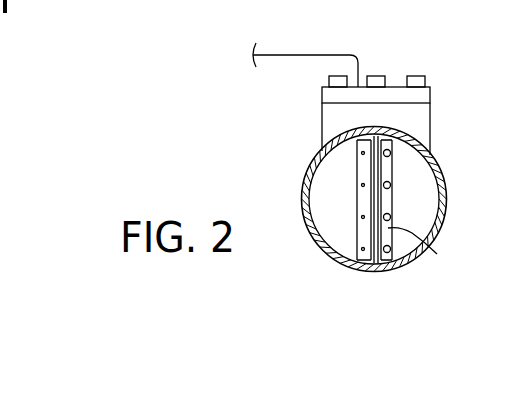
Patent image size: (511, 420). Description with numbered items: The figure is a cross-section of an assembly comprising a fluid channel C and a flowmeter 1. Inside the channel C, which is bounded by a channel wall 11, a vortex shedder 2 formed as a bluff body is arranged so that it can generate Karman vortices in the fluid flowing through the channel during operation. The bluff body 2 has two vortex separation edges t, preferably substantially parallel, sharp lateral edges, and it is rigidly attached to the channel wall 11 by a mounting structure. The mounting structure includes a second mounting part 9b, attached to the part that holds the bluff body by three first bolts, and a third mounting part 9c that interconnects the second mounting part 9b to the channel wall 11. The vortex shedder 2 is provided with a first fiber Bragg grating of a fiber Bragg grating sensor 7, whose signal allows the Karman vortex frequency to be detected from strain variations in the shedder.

The fiber Bragg grating sensor 7 is at (312, 55).
The second mounting part 9b is at (425, 89).
The third mounting part 9c is at (328, 118).
The flowmeter 1 is at (443, 115).
The channel wall 11 is at (303, 192).
The fluid channel C is at (428, 195).
The vortex separation edges t is at (392, 170).
The vortex shedder 2 is at (417, 250).